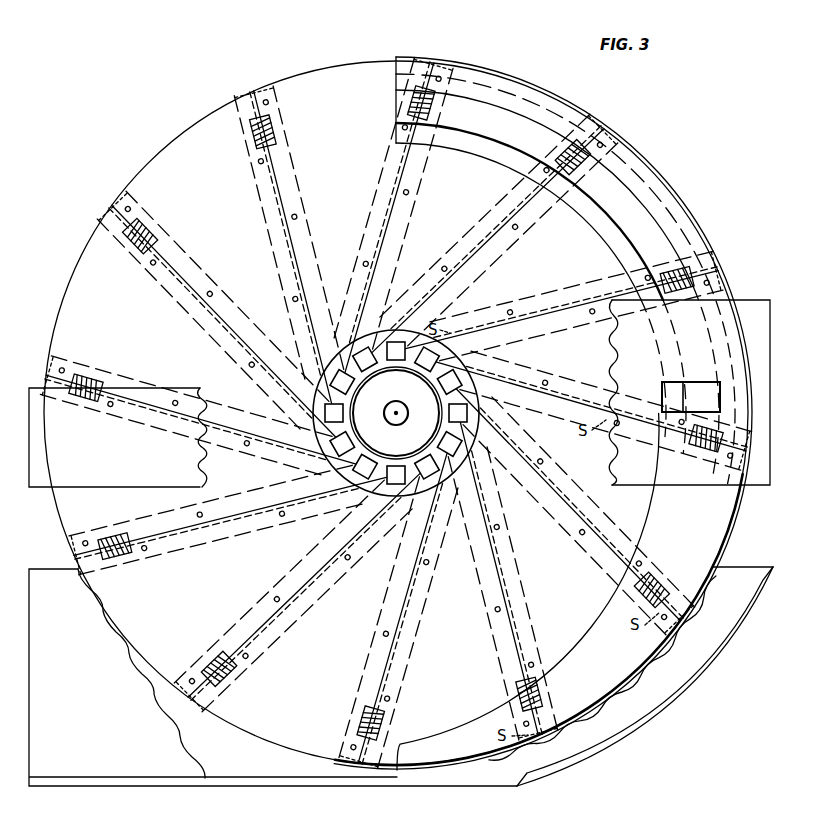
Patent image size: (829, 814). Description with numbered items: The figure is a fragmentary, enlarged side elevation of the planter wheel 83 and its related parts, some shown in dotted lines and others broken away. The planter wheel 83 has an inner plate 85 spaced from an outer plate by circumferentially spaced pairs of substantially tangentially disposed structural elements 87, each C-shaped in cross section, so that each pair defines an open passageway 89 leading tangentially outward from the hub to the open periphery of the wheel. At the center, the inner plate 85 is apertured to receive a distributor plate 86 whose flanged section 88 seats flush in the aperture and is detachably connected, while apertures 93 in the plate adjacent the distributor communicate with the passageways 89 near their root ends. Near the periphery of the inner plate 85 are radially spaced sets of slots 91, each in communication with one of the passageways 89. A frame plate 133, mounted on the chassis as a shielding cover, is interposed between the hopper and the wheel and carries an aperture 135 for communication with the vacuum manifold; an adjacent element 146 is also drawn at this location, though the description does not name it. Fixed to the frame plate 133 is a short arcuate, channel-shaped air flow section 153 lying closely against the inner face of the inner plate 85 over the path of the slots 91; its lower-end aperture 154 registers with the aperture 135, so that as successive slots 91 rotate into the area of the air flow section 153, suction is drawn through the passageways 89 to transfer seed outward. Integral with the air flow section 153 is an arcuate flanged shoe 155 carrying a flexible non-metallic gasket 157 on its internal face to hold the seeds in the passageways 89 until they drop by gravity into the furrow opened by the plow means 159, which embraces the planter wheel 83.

The planter wheel 83 is at (163, 93).
The inner plate 85 is at (333, 77).
The distributor plate 86 is at (350, 420).
The structural elements 87 is at (288, 222).
The flanged section 88 is at (534, 392).
The passageways 89 is at (272, 190).
The slots 91 is at (262, 133).
The apertures 93 is at (394, 357).
The frame plate 133 is at (746, 312).
The aperture 135 is at (692, 382).
The partition 146 is at (673, 394).
The air flow section 153 is at (623, 188).
The aperture 154 is at (697, 402).
The arcuate flanged shoe 155 is at (468, 63).
The flexible non-metallic gasket 157 is at (530, 95).
The plow means 159 is at (700, 675).